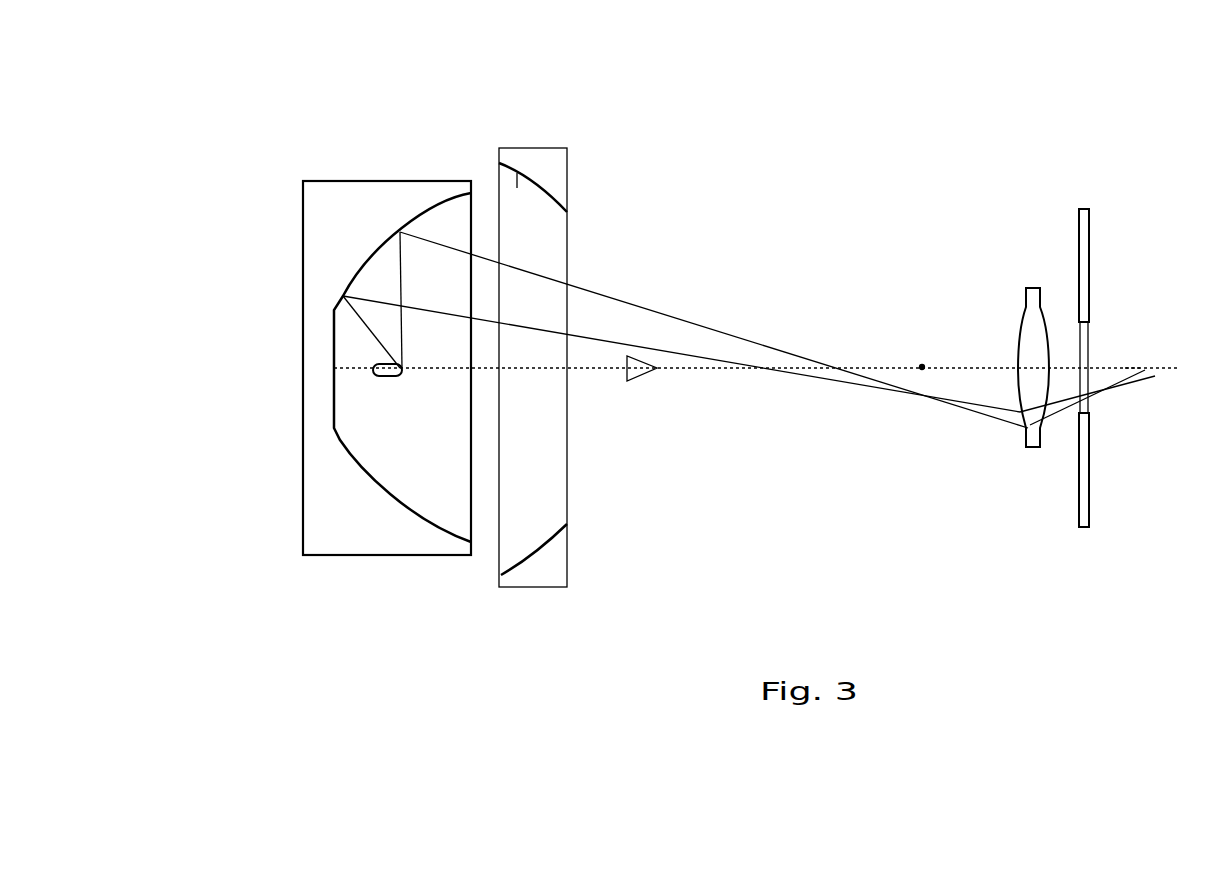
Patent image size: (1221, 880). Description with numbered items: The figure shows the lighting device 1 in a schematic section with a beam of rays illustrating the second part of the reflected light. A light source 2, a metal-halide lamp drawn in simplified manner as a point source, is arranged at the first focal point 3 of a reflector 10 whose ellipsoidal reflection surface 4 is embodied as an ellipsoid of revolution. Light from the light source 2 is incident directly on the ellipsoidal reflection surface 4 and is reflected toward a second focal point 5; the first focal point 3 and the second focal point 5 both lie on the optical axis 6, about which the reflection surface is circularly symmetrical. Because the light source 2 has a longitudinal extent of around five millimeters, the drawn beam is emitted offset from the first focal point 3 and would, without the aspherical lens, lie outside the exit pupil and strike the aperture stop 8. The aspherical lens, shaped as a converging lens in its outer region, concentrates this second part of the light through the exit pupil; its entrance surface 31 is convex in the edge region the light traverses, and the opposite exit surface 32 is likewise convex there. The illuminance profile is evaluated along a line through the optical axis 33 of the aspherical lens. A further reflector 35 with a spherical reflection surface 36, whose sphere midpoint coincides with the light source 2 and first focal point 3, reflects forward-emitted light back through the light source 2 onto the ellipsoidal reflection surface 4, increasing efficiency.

The lighting device 1 is at (742, 175).
The light source 2 is at (372, 376).
The first focal point 3 is at (378, 365).
The ellipsoidal reflection surface 4 is at (405, 506).
The second focal point 5 is at (922, 367).
The optical axis 6 is at (590, 369).
The aperture stop 8 is at (1087, 495).
The reflector 10 is at (376, 490).
The entrance surface 31 is at (1019, 348).
The exit surface 32 is at (1082, 322).
The optical axis of the aspherical lens 33 is at (1133, 367).
The further reflector 35 is at (545, 162).
The spherical reflection surface 36 is at (517, 172).